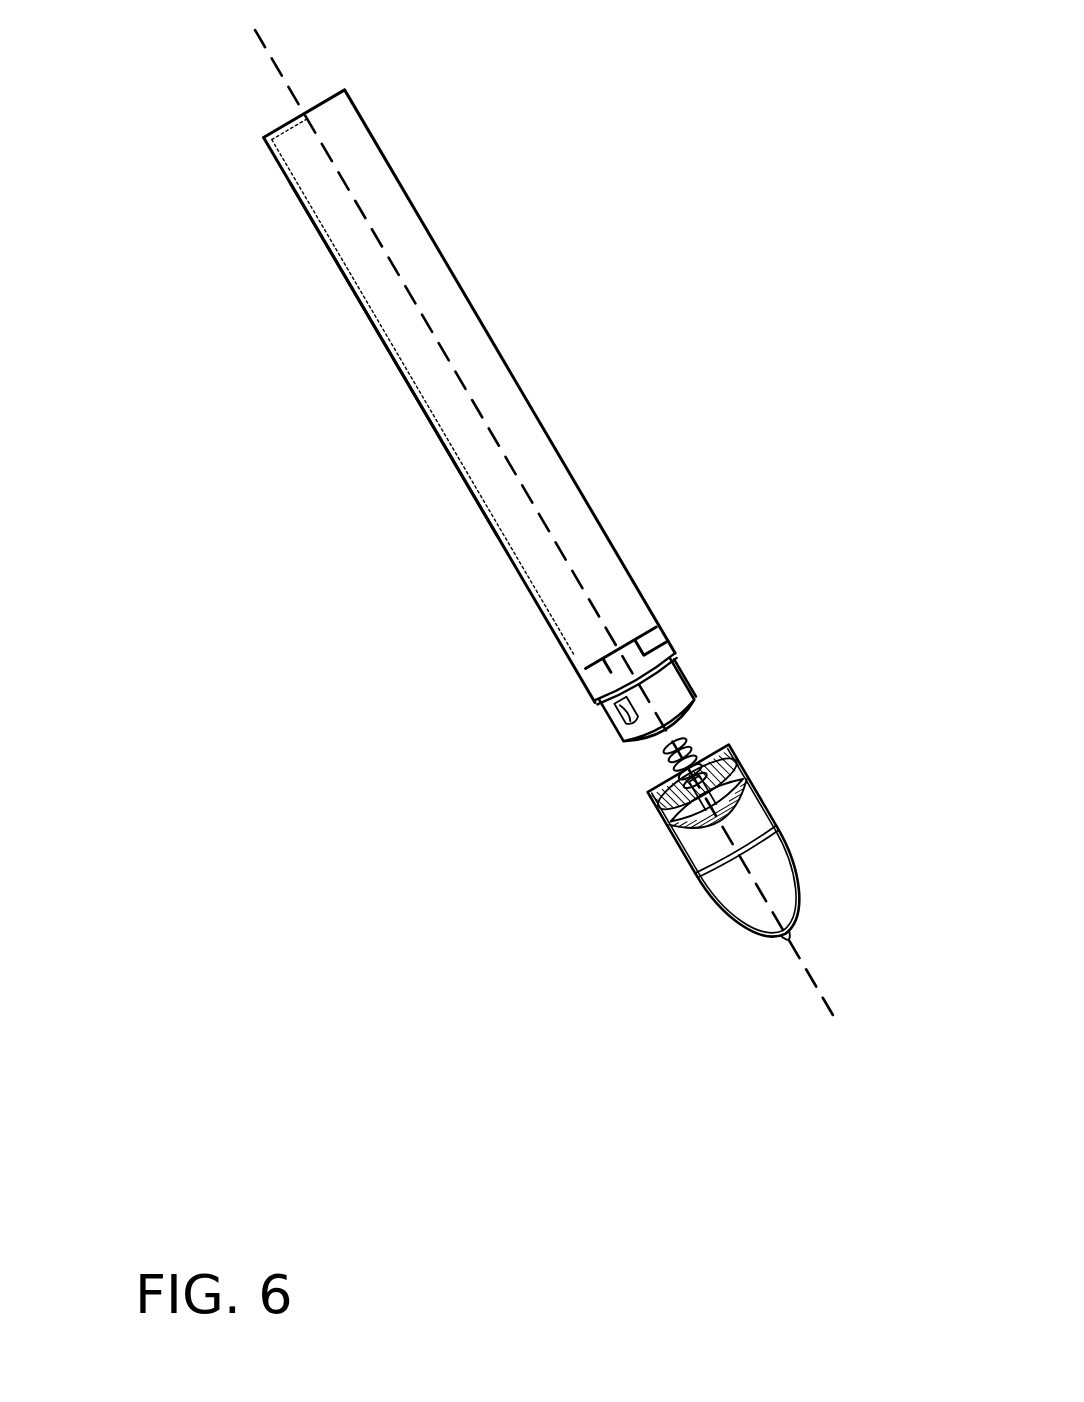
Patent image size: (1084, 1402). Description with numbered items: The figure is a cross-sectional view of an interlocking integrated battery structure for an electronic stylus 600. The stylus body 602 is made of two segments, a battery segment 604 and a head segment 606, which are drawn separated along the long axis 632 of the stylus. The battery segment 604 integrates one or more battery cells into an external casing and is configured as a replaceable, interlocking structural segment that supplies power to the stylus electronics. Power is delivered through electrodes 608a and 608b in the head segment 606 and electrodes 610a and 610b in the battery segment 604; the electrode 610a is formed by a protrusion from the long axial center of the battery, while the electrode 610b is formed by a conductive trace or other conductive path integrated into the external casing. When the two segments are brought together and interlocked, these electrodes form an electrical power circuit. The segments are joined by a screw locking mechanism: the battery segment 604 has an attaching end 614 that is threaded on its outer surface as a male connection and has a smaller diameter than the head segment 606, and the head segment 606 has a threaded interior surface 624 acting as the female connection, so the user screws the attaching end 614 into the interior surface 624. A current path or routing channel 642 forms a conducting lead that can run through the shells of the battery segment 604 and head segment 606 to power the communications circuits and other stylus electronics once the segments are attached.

The electronic stylus 600 is at (200, 52).
The stylus body 602 is at (172, 168).
The battery segment 604 is at (505, 362).
The head segment 606 is at (737, 985).
The electrode 608a is at (688, 752).
The electrode 608b is at (647, 793).
The electrode 610a is at (632, 645).
The electrode 610b is at (597, 707).
The attaching end 614 is at (734, 690).
The interior surface 624 is at (740, 766).
The long axis 632 is at (504, 456).
The routing channel 642 is at (423, 415).